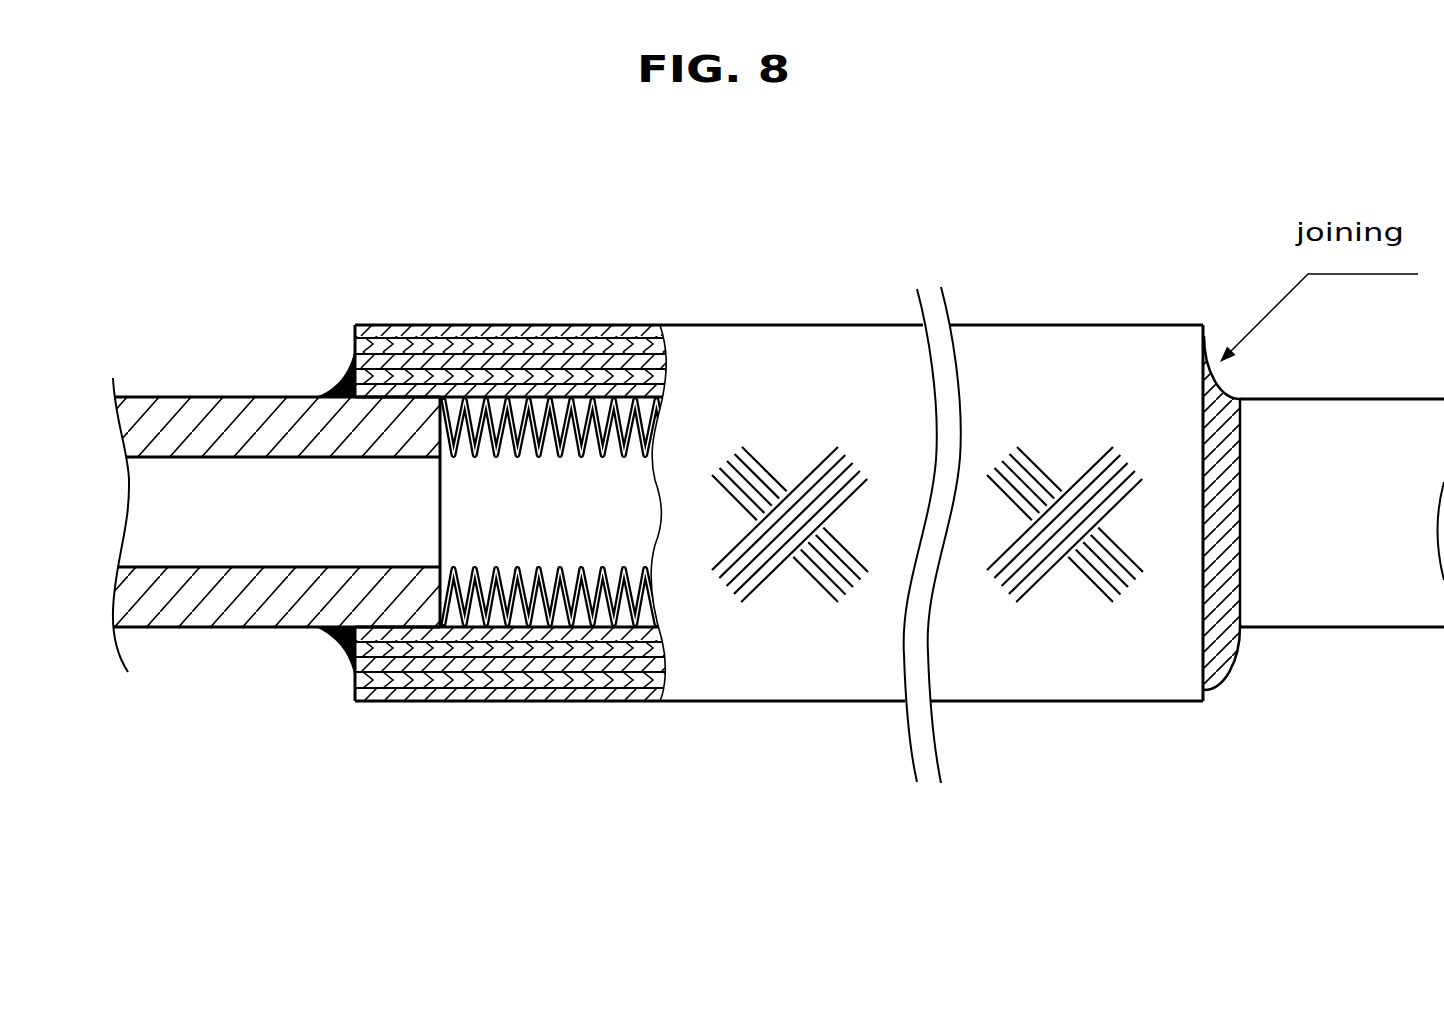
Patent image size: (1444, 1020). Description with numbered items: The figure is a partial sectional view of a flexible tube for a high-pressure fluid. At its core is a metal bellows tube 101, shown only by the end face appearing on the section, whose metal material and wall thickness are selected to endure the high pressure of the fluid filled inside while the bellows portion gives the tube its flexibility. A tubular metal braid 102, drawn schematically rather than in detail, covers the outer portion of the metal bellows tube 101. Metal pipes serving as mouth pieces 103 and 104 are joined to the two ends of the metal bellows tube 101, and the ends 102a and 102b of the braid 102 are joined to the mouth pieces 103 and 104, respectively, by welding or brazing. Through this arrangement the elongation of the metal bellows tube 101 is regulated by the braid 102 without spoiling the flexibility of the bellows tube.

The metal bellows tube 101 is at (508, 608).
The tubular metal braid 102 is at (585, 325).
The end of metal braid 102a is at (442, 247).
The end of metal braid 102b is at (1202, 257).
The mouth piece 103 is at (183, 627).
The mouth piece 104 is at (1342, 596).